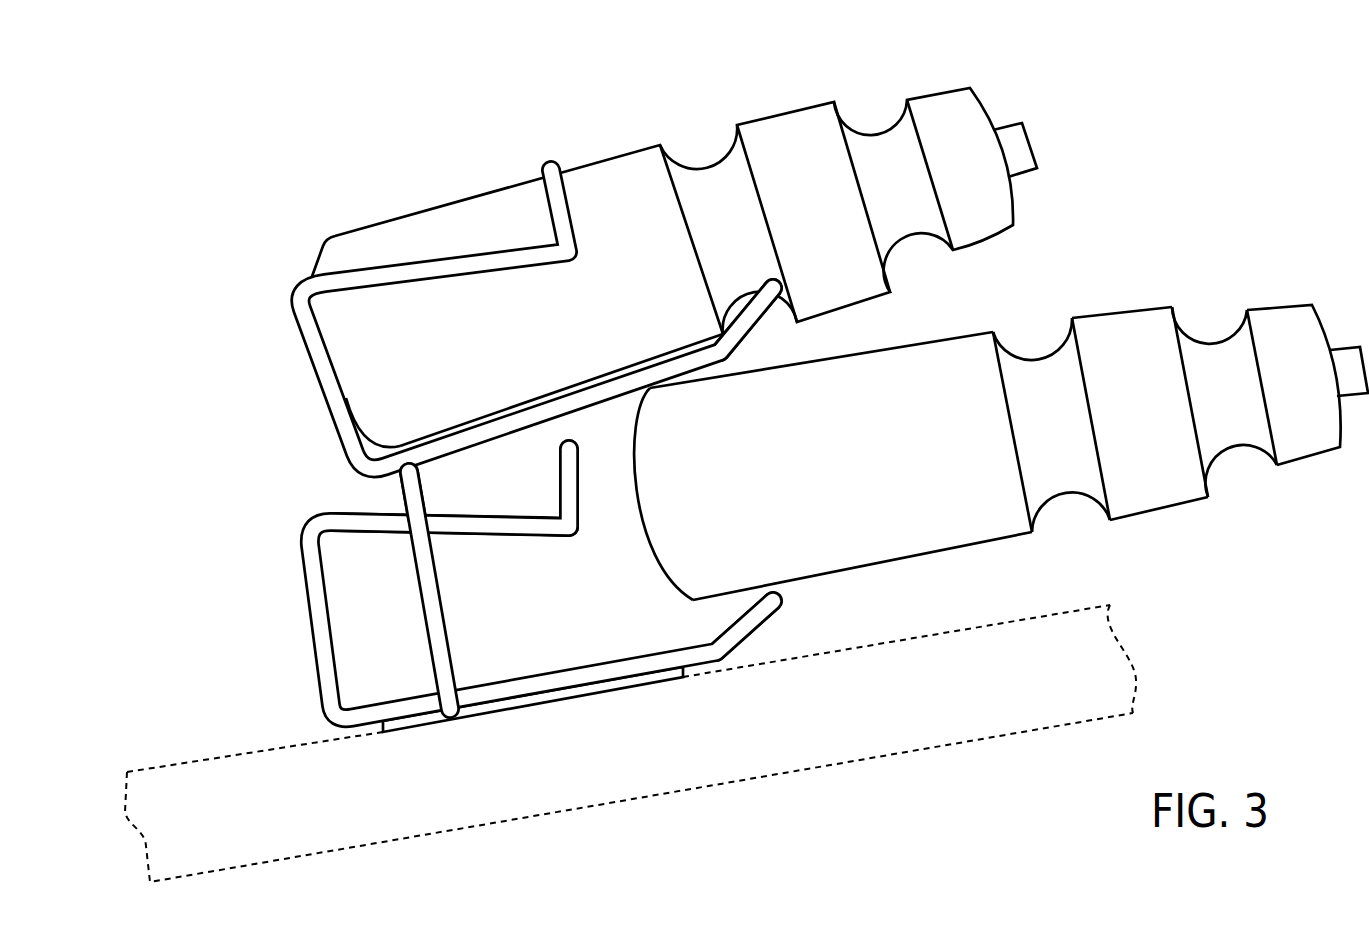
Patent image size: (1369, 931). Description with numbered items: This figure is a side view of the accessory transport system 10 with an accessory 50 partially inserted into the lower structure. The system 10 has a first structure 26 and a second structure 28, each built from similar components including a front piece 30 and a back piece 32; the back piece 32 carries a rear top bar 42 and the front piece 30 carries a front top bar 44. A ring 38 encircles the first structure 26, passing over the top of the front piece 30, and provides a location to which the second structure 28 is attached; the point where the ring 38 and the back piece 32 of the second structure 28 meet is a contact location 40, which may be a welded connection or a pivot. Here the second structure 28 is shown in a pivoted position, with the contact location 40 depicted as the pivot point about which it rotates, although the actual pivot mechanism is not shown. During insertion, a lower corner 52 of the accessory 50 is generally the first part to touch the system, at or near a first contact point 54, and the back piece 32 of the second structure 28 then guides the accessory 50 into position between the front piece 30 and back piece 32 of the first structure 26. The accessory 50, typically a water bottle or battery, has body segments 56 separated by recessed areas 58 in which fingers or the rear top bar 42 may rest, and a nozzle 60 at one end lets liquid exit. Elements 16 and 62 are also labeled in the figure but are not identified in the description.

The accessory transport system 10 is at (538, 112).
The mounting surface 16 is at (1010, 702).
The first structure 26 is at (550, 572).
The second structure 28 is at (516, 311).
The front piece 30 is at (473, 530).
The back piece 32 is at (464, 441).
The ring 38 is at (351, 590).
The contact location 40 is at (440, 478).
The rear top bar 42 is at (801, 598).
The front top bar 44 is at (577, 500).
The accessory 50 is at (1001, 411).
The lower corner 52 is at (665, 413).
The first contact point 54 is at (656, 388).
The body segments 56 is at (880, 472).
The recessed area 58 is at (1068, 436).
The nozzle 60 is at (1352, 372).
The upstanding leg of second clip 62 is at (585, 433).